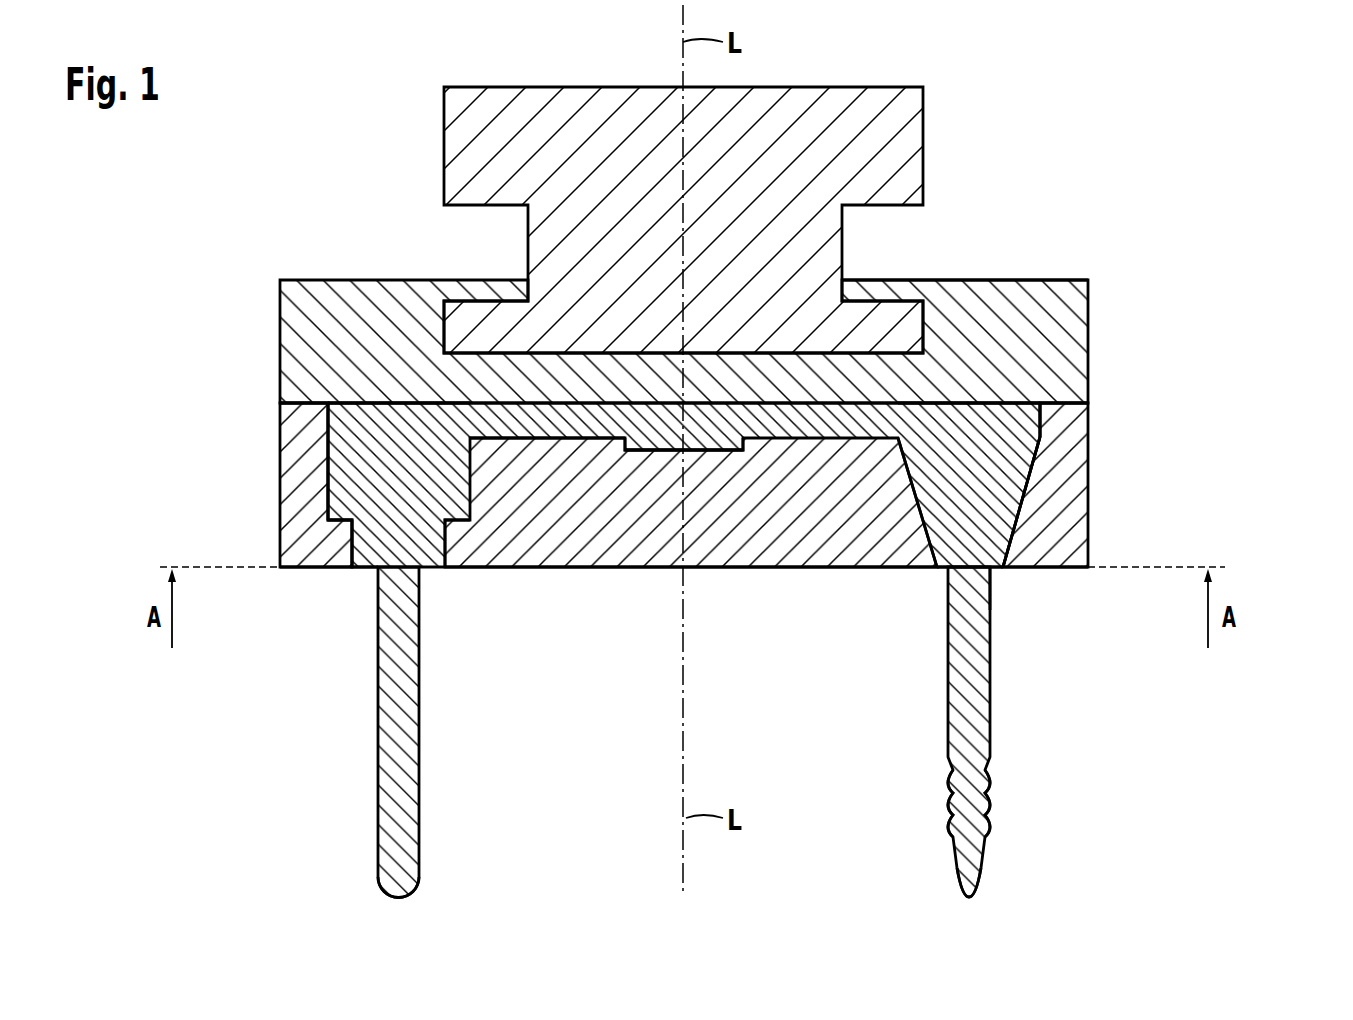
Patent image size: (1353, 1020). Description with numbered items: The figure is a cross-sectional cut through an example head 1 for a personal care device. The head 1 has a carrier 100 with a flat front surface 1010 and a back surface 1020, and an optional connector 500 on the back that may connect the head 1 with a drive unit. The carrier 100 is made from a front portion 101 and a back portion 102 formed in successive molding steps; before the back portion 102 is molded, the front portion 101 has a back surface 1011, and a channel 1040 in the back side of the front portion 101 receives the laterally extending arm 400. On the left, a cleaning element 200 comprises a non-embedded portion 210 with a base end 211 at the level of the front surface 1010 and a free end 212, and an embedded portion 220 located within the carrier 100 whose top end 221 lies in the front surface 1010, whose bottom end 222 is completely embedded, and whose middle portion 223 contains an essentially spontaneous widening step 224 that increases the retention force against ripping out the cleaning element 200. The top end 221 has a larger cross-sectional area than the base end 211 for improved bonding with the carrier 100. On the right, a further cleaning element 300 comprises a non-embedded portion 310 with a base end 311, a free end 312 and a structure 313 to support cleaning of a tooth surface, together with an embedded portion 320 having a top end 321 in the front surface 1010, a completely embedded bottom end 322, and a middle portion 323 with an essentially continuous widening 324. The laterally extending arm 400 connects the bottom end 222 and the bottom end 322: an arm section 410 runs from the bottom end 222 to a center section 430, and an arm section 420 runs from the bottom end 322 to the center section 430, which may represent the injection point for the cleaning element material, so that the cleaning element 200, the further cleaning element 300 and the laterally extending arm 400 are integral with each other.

The head 1 is at (1278, 181).
The carrier 100 is at (758, 399).
The front portion 101 is at (1090, 472).
The back portion 102 is at (1013, 297).
The front surface 1010 is at (1046, 570).
The back surface of the front portion 1011 is at (1010, 410).
The back surface 1020 is at (944, 272).
The recess 1040 is at (638, 470).
The cleaning element 200 is at (351, 666).
The non-embedded portion 210 is at (403, 742).
The base end 211 is at (377, 570).
The free end 212 is at (403, 898).
The embedded portion 220 is at (348, 462).
The top end 221 is at (360, 572).
The bottom end 222 is at (348, 430).
The middle portion 223 is at (320, 513).
The widening step 224 is at (445, 522).
The further cleaning element 300 is at (1011, 603).
The non-embedded portion 310 is at (970, 717).
The base end 311 is at (992, 570).
The free end 312 is at (968, 897).
The structure 313 is at (988, 812).
The embedded portion 320 is at (1013, 427).
The top end 321 is at (1010, 537).
The bottom end 322 is at (1058, 400).
The middle portion 323 is at (1036, 494).
The widening 324 is at (1033, 463).
The laterally extending arm 400 is at (691, 545).
The arm section 410 is at (520, 422).
The arm section 420 is at (788, 440).
The center section 430 is at (690, 450).
The connector 500 is at (907, 147).